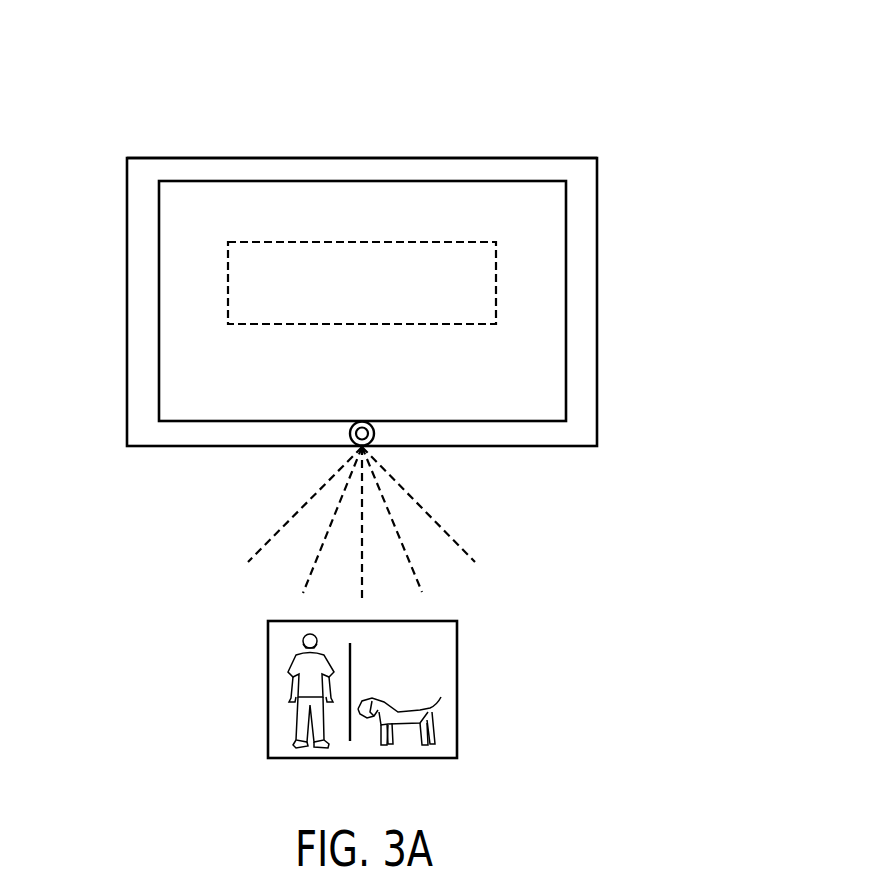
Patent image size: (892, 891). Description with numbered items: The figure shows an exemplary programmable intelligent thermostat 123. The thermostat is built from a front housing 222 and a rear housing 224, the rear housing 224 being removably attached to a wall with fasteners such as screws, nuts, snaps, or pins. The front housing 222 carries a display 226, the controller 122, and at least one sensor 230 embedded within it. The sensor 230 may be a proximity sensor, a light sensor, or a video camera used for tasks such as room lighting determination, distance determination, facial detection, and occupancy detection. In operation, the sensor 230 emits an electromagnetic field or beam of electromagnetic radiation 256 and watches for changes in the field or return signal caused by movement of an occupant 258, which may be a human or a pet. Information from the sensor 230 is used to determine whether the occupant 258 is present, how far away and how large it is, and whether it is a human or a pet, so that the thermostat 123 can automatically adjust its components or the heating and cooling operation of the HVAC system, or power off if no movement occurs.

The programmable intelligent thermostat 123 is at (602, 85).
The front housing 222 is at (142, 353).
The rear housing 224 is at (201, 157).
The display 226 is at (498, 200).
The controller 122 is at (496, 283).
The sensor 230 is at (365, 422).
The beam of electromagnetic radiation 256 is at (440, 517).
The occupant 258 is at (458, 665).